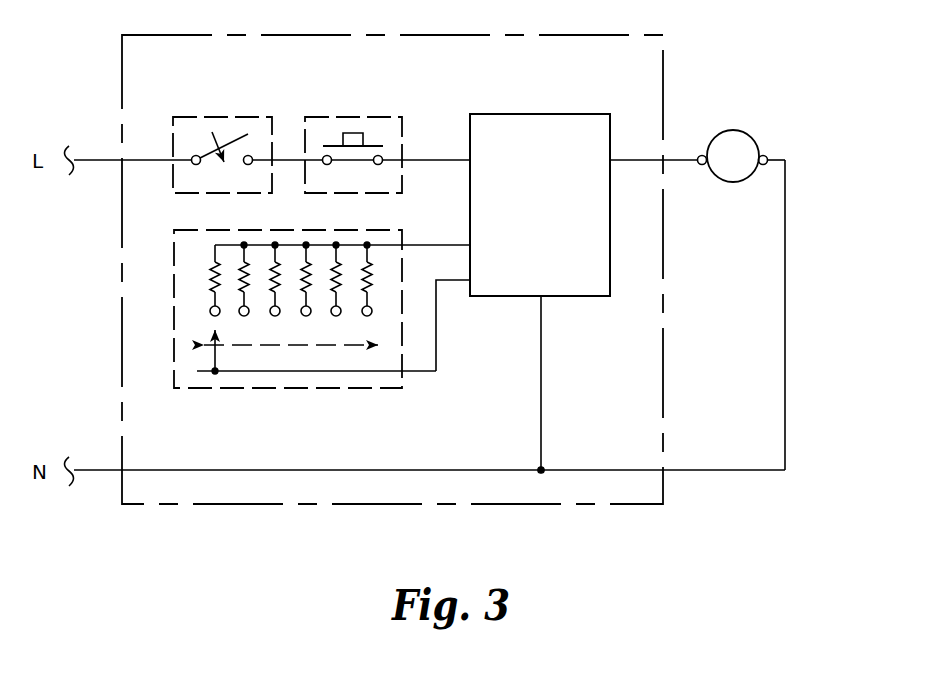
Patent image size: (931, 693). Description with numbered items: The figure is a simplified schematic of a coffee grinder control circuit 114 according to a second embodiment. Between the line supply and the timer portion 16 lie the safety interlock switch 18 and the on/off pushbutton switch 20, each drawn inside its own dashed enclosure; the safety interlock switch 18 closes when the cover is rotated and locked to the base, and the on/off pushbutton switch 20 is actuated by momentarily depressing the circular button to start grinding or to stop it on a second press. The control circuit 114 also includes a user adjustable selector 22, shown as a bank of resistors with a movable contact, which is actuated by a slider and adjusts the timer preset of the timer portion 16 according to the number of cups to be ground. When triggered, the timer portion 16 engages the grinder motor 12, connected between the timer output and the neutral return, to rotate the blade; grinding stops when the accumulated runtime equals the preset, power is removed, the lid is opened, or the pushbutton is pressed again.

The grinder motor 12 is at (757, 133).
The timer portion 16 is at (548, 113).
The safety interlock switch 18 is at (214, 111).
The on/off pushbutton switch 20 is at (344, 111).
The user adjustable selector 22 is at (281, 393).
The control circuit 114 is at (231, 513).